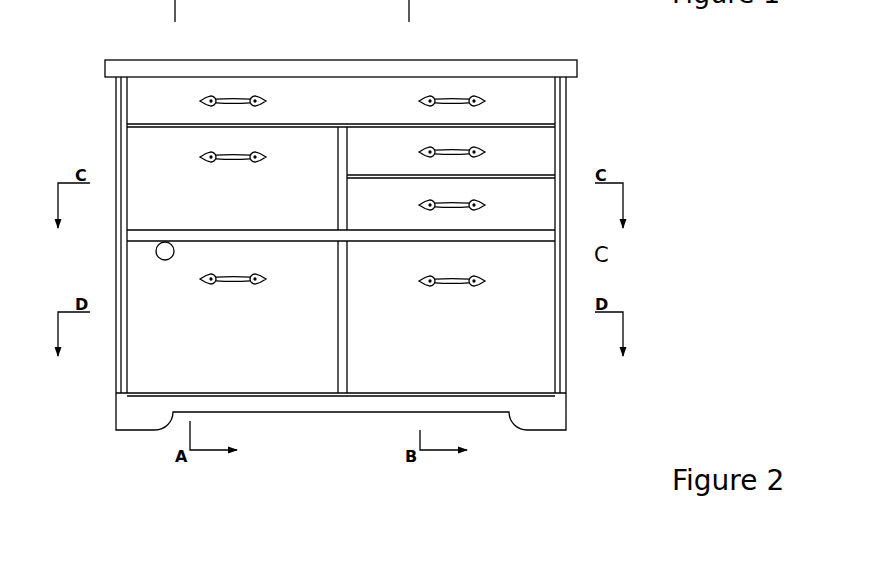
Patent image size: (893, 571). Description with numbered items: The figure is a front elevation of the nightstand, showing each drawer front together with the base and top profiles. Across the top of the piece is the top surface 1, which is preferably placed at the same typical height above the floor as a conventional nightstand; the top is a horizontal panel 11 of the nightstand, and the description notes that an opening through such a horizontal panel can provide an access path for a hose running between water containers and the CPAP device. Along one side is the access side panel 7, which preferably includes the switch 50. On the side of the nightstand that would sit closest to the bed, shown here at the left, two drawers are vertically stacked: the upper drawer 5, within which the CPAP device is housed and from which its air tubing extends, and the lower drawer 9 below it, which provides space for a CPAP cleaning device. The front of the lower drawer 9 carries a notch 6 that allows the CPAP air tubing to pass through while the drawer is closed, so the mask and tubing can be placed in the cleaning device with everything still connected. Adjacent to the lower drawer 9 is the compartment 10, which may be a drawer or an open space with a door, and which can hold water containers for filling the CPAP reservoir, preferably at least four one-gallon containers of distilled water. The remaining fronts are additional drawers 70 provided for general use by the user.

The top surface 1 is at (143, 62).
The horizontal panel 11 is at (547, 80).
The switch 50 is at (117, 108).
The upper drawer 5 is at (137, 146).
The notch 6 is at (165, 243).
The access side panel 7 is at (117, 237).
The additional drawers 70 is at (547, 133).
The lower drawer 9 is at (158, 355).
The compartment 10 is at (527, 363).